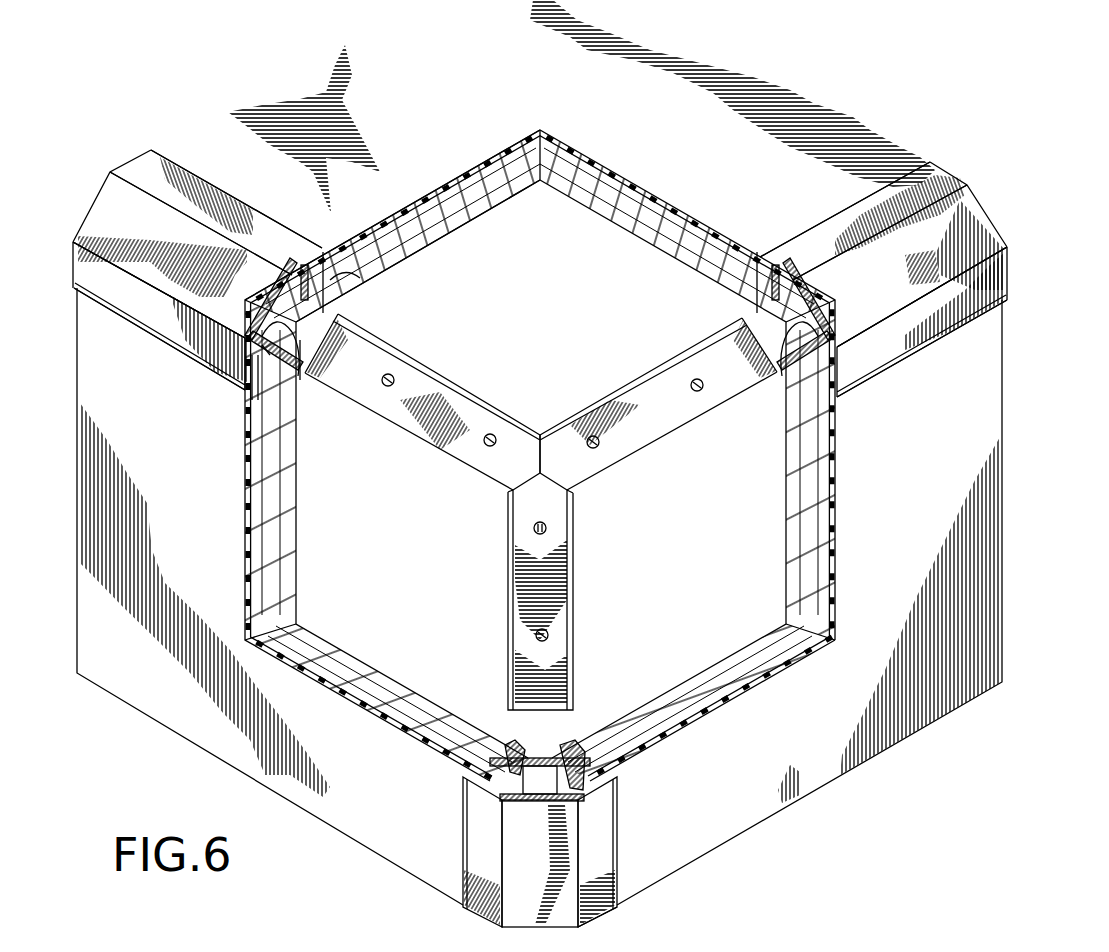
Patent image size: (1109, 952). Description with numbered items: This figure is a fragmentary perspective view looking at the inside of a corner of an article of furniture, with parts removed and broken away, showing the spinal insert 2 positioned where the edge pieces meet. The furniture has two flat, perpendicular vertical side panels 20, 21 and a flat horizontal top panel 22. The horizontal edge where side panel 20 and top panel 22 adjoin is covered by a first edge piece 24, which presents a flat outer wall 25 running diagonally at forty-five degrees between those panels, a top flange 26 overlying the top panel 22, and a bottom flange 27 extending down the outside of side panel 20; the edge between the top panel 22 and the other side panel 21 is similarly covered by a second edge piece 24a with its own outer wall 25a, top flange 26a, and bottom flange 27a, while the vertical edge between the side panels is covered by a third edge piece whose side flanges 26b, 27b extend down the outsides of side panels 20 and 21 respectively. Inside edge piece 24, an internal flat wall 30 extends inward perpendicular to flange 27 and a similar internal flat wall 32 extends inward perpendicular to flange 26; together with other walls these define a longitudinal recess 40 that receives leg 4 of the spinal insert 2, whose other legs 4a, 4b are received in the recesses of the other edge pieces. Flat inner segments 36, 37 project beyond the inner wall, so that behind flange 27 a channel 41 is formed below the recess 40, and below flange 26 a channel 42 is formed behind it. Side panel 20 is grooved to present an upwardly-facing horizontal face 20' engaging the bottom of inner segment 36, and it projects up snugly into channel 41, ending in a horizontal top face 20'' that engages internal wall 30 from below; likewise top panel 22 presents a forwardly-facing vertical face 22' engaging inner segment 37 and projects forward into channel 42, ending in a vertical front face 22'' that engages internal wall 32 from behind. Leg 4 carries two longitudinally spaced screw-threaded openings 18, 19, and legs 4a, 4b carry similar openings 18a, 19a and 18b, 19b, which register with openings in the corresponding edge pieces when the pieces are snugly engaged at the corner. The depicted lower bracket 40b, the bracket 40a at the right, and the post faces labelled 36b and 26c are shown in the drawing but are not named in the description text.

The spinal insert 2 is at (490, 505).
The leg 4 is at (473, 392).
The leg 4a is at (675, 366).
The leg 4b is at (573, 600).
The screw-threaded opening 18 is at (392, 378).
The screw-threaded opening 18a is at (698, 378).
The screw-threaded opening 18b is at (538, 632).
The screw-threaded opening 19 is at (492, 434).
The screw-threaded opening 19a is at (590, 438).
The screw-threaded opening 19b is at (547, 526).
The side panel 20 is at (270, 596).
The upwardly-facing horizontal face 20' is at (315, 396).
The horizontal top face 20'' is at (240, 324).
The side panel 21 is at (864, 532).
The top panel 22 is at (540, 428).
The forwardly-facing vertical face 22' is at (418, 260).
The vertical front face 22'' is at (392, 215).
The first edge piece 24 is at (160, 354).
The second edge piece 24a is at (912, 373).
The outer wall 25 is at (113, 229).
The outer wall 25a is at (980, 215).
The top flange 26 is at (140, 167).
The top flange 26a is at (947, 172).
The side flange 26b is at (472, 825).
The corner post edge 26c is at (658, 929).
The bottom flange 27 is at (122, 305).
The bottom flange 27a is at (872, 363).
The side flange 27b is at (610, 840).
The internal flat wall 30 is at (302, 368).
The internal flat wall 32 is at (292, 292).
The inner segment 36 is at (258, 386).
The corner post front face 36b is at (520, 913).
The inner segment 37 is at (342, 274).
The longitudinal recess 40 is at (277, 320).
The corner bracket 40a is at (797, 330).
The corner bracket 40b is at (530, 757).
The channel 41 is at (257, 364).
The channel 42 is at (305, 262).